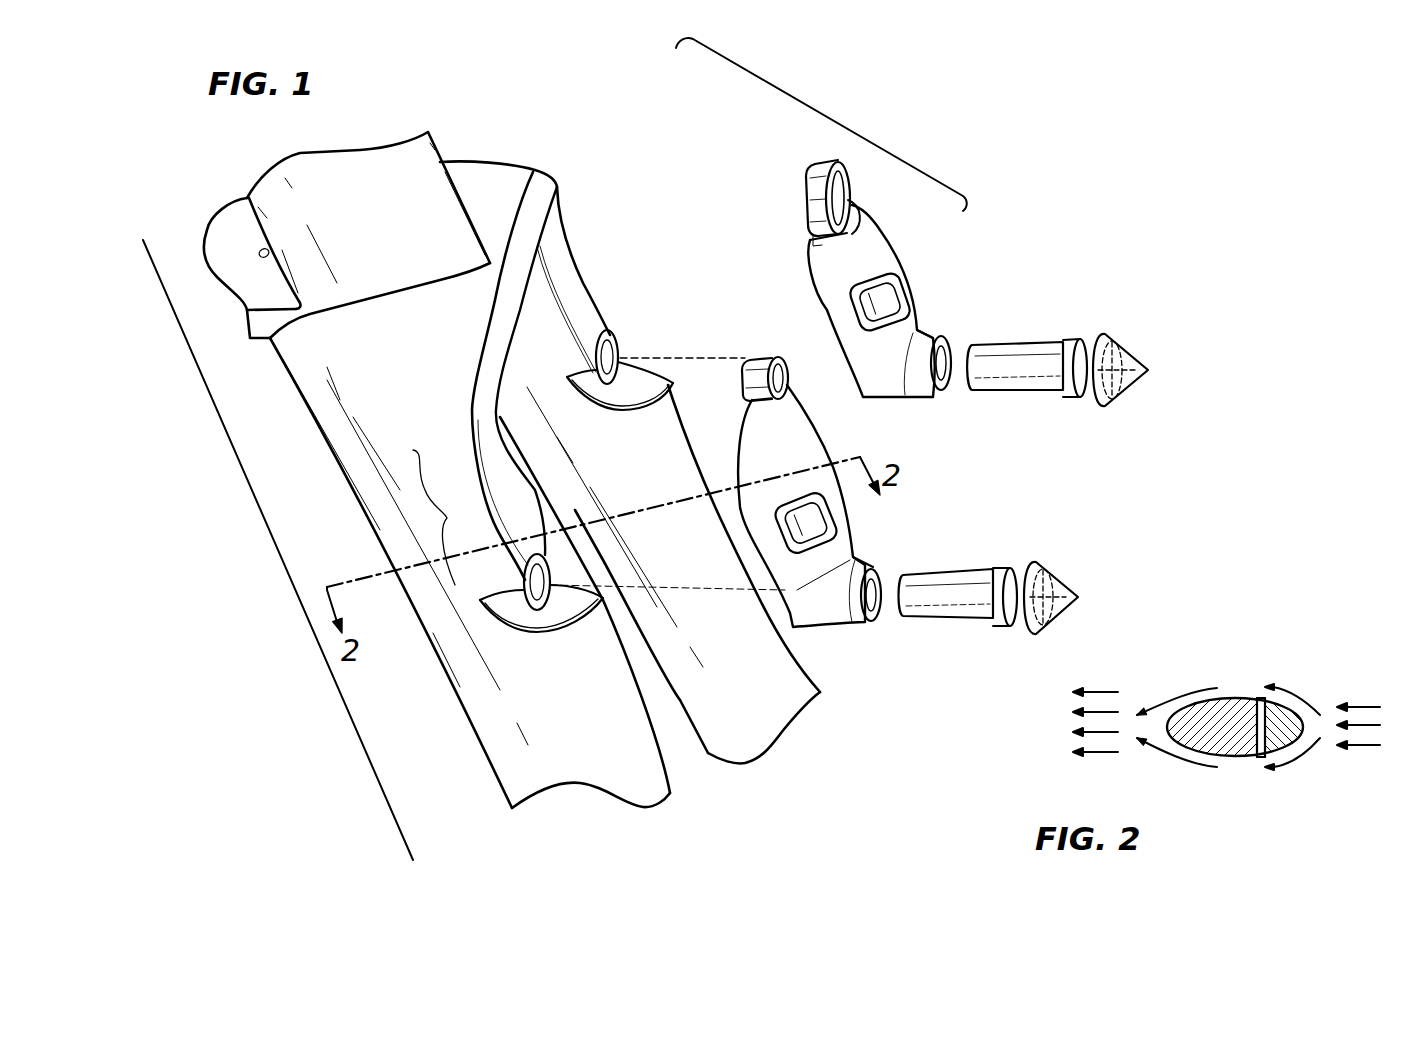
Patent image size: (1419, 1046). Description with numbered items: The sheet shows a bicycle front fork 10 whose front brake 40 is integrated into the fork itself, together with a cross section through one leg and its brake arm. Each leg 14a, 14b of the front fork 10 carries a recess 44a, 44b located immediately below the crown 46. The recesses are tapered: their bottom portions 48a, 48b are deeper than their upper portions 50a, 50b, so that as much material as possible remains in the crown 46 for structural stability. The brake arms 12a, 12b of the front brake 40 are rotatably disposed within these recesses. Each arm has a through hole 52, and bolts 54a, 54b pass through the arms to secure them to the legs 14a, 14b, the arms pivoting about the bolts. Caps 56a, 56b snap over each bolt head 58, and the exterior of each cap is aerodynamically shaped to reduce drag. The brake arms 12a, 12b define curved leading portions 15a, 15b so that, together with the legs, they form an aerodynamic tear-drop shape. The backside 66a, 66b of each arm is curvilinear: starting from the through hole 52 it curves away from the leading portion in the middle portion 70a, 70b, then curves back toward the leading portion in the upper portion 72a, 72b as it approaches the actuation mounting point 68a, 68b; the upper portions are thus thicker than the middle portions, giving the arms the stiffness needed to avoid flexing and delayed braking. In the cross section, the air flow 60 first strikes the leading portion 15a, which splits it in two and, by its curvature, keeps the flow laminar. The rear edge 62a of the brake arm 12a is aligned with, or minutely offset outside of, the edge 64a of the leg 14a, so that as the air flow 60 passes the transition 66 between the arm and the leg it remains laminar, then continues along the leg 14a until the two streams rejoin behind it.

In FIG. 1, the front fork 10 is at (278, 548).
In FIG. 1, the brake arm 12a is at (819, 469).
In FIG. 2, the brake arm 12a is at (1270, 768).
In FIG. 1, the brake arm 12b is at (884, 268).
In FIG. 1, the leg 14a is at (595, 812).
In FIG. 2, the leg 14a is at (1200, 728).
In FIG. 1, the leg 14b is at (785, 765).
In FIG. 1, the leading portion 15a is at (818, 437).
In FIG. 2, the leading portion 15a is at (1275, 680).
In FIG. 1, the leading portion 15b is at (890, 226).
In FIG. 1, the front brake 40 is at (838, 120).
In FIG. 1, the recess 44a is at (457, 409).
In FIG. 1, the recess 44b is at (643, 281).
In FIG. 1, the crown 46 is at (505, 172).
In FIG. 1, the bottom portion 48a is at (417, 608).
In FIG. 1, the bottom portion 48b is at (640, 283).
In FIG. 1, the upper portion 50a is at (367, 515).
In FIG. 1, the upper portion 50b is at (603, 213).
In FIG. 1, the through hole 52 is at (933, 385).
In FIG. 1, the bolt 54a is at (936, 578).
In FIG. 1, the bolt 54b is at (1002, 355).
In FIG. 1, the cap 56a is at (1060, 588).
In FIG. 1, the cap 56b is at (1118, 390).
In FIG. 1, the bolt head 58 is at (1080, 345).
In FIG. 2, the air flow 60 is at (1365, 700).
In FIG. 2, the rear edge of front brake arm 62a is at (1267, 687).
In FIG. 2, the edge of leg 64a is at (1258, 697).
In FIG. 2, the transition 66 is at (1262, 697).
In FIG. 1, the backside 66a is at (737, 462).
In FIG. 1, the backside 66b is at (806, 290).
In FIG. 1, the actuation mounting point 68a is at (758, 368).
In FIG. 1, the actuation mounting point 68b is at (810, 180).
In FIG. 1, the middle portion 70a is at (735, 475).
In FIG. 1, the middle portion 70b is at (920, 323).
In FIG. 1, the upper portion 72a is at (793, 365).
In FIG. 1, the upper portion 72b is at (860, 165).